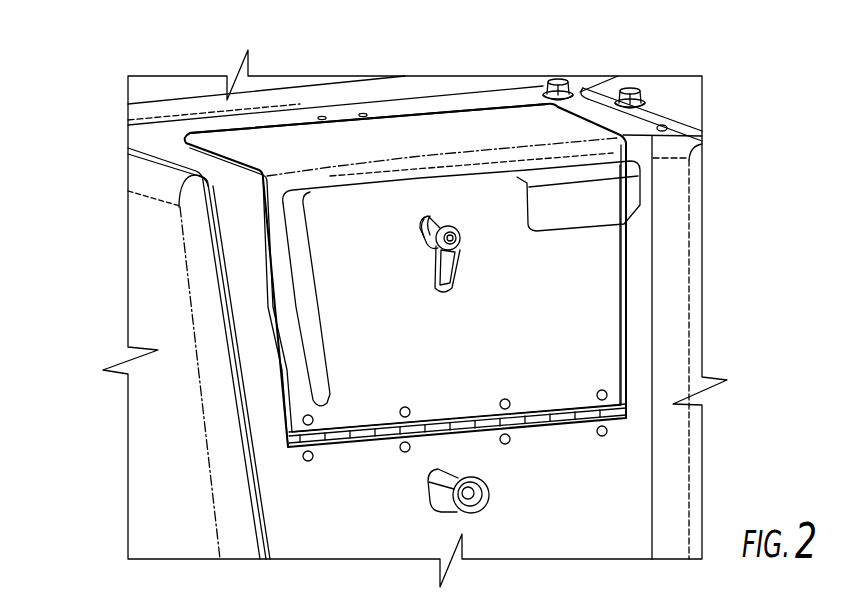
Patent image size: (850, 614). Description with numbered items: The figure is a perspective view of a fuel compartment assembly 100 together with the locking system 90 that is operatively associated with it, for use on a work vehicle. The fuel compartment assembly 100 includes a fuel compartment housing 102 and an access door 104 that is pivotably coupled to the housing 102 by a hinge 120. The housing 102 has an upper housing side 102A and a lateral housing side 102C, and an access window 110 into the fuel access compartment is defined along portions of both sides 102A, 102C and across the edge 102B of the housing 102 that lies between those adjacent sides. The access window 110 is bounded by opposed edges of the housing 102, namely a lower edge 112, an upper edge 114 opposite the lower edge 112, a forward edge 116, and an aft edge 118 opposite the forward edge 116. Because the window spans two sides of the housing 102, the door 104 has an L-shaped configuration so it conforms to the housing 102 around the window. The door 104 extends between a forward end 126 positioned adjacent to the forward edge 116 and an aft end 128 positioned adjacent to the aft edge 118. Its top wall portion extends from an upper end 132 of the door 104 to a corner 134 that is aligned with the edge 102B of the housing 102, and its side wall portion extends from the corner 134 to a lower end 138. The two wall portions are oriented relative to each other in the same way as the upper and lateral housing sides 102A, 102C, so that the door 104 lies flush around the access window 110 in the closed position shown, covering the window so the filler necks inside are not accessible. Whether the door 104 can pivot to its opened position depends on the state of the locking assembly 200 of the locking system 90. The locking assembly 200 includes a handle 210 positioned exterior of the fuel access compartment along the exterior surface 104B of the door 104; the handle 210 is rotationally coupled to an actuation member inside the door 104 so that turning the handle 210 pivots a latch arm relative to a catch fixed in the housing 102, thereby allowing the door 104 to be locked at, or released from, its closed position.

The locking system 90 is at (47, 106).
The fuel compartment assembly 100 is at (668, 150).
The fuel compartment housing 102 is at (148, 299).
The upper housing side 102A is at (145, 137).
The edge of the housing 102B is at (232, 185).
The lateral housing side 102C is at (230, 257).
The access door 104 is at (612, 287).
The exterior surface of the door 104B is at (559, 296).
The access window 110 is at (421, 115).
The lower edge 112 is at (370, 444).
The upper edge 114 is at (262, 128).
The forward edge 116 is at (280, 402).
The aft edge 118 is at (628, 367).
The hinge 120 is at (548, 421).
The forward end of the door 126 is at (285, 322).
The aft end of the door 128 is at (618, 336).
The upper end of the door 132 is at (307, 127).
The corner of the door 134 is at (409, 168).
The lower end of the door 138 is at (452, 417).
The locking assembly 200 is at (419, 256).
The handle 210 is at (458, 219).